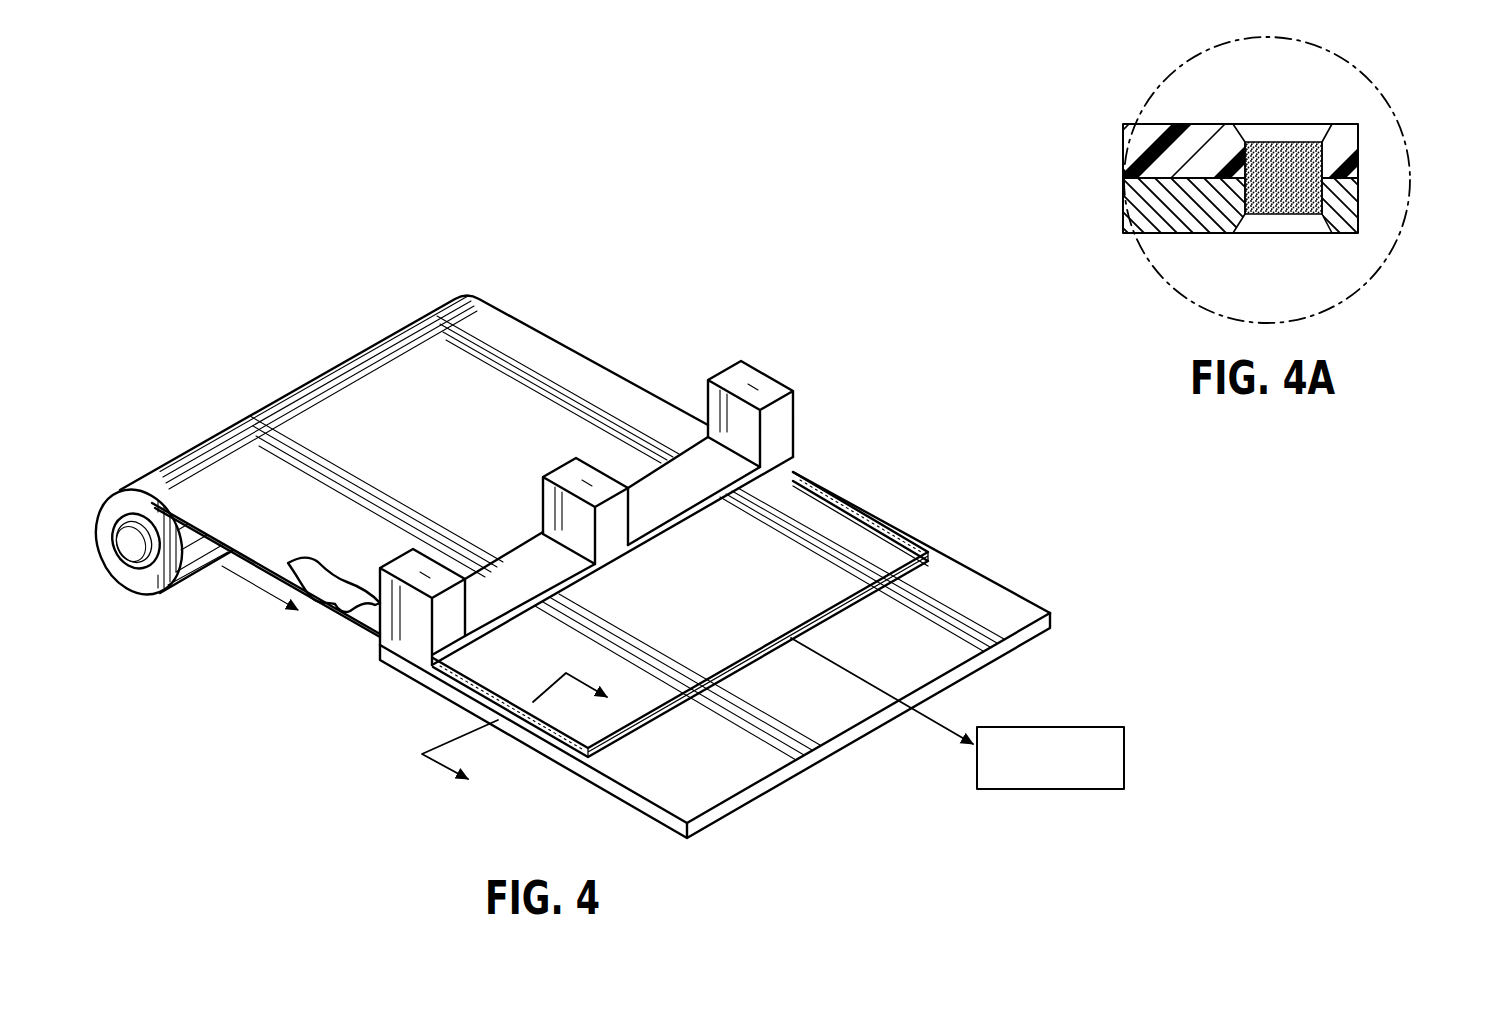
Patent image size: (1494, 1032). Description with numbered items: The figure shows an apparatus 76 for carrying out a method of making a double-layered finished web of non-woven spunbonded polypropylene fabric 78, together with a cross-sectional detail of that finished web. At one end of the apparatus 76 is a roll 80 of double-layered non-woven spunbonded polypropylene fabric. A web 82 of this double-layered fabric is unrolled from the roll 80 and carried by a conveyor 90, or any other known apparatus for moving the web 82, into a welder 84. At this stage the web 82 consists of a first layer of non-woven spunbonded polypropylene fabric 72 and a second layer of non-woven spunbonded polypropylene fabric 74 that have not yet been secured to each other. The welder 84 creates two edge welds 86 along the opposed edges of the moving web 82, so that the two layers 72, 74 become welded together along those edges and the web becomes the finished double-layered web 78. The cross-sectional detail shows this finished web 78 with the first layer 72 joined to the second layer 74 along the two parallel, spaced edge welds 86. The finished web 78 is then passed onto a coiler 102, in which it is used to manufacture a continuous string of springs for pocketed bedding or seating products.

In FIG. 4, the first layer of non-woven spunbonded polypropylene fabric 72 is at (331, 599).
In FIG. 4A, the first layer of non-woven spunbonded polypropylene fabric 72 is at (1353, 202).
In FIG. 4, the second layer of non-woven spunbonded polypropylene fabric 74 is at (213, 485).
In FIG. 4A, the second layer of non-woven spunbonded polypropylene fabric 74 is at (1353, 158).
In FIG. 4, the apparatus 76 is at (649, 316).
In FIG. 4, the double-layered finished web of non-woven spunbonded polypropylene fabric 78 is at (733, 610).
In FIG. 4A, the double-layered finished web of non-woven spunbonded polypropylene fabric 78 is at (1210, 118).
In FIG. 4, the roll 80 is at (151, 594).
In FIG. 4, the web of double-layered non-woven spunbonded polypropylene fabric 82 is at (472, 458).
In FIG. 4, the welder 84 is at (778, 378).
In FIG. 4, the edge welds 86 is at (818, 500).
In FIG. 4A, the edge welds 86 is at (1285, 141).
In FIG. 4, the conveyor 90 is at (907, 664).
In FIG. 4, the coiler 102 is at (1125, 760).